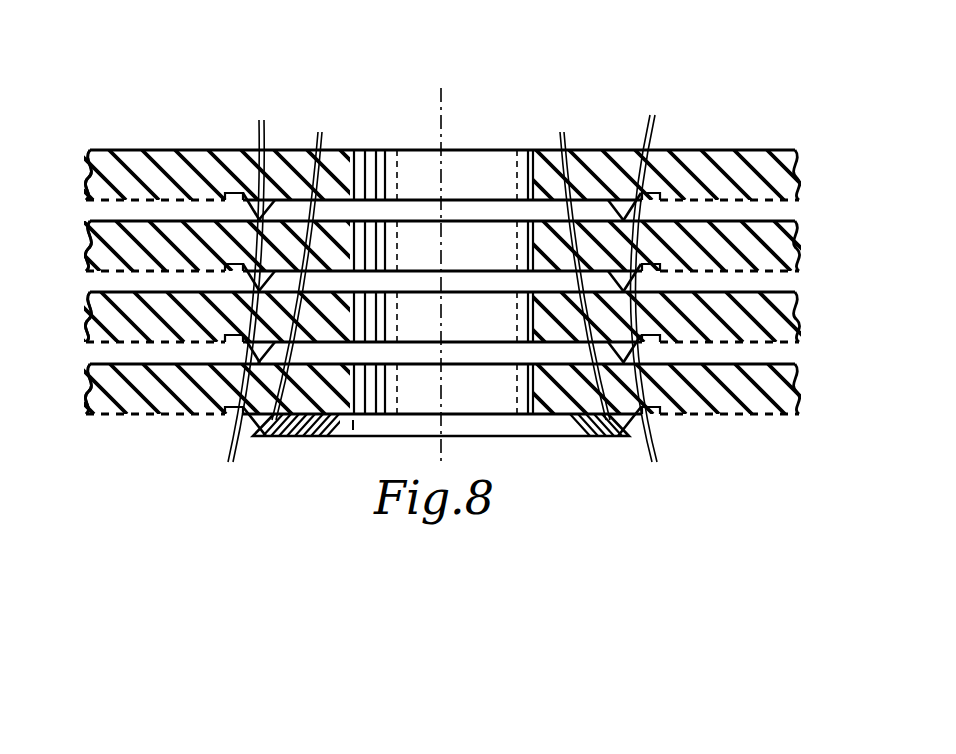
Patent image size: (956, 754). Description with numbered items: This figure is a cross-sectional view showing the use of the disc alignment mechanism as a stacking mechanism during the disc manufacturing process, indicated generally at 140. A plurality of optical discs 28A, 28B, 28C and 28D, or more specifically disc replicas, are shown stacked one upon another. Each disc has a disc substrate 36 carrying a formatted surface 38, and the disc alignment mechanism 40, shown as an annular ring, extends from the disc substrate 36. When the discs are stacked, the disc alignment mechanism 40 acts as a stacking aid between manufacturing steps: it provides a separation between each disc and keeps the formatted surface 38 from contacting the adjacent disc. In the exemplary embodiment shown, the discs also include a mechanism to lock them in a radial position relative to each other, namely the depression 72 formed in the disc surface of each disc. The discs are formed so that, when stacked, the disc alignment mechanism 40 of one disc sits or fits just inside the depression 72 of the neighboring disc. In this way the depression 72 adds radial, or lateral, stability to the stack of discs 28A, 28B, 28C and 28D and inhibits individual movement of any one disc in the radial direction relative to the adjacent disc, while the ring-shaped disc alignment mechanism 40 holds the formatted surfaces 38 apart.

The stacking mechanism use 140 is at (444, 250).
The optical disc 28A is at (77, 151).
The optical disc 28B is at (76, 234).
The optical disc 28C is at (76, 319).
The optical disc 28D is at (76, 397).
The disc substrate 36 is at (794, 168).
The formatted surface 38 is at (784, 201).
The disc alignment mechanism 40 is at (441, 291).
The depression 72 is at (441, 261).